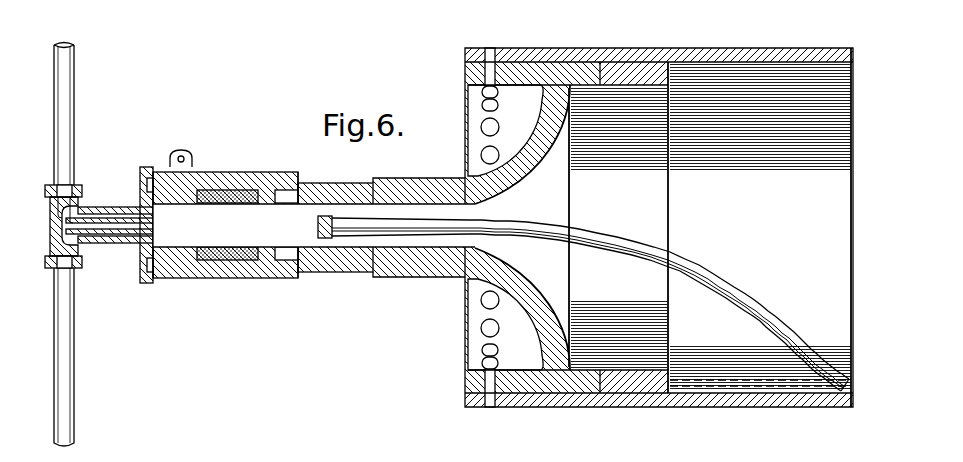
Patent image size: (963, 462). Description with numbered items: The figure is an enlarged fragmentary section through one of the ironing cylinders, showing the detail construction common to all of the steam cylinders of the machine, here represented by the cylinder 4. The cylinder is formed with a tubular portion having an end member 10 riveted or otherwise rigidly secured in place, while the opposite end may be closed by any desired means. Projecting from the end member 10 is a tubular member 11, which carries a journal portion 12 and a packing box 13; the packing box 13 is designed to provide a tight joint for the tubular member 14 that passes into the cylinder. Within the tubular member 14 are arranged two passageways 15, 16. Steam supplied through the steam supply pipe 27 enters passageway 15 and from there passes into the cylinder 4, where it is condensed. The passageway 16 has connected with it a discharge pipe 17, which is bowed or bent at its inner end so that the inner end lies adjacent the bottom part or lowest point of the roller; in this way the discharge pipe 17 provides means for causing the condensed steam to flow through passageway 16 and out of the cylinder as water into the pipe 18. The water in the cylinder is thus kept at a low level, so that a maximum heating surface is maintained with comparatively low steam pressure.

The steam supply pipe 27 is at (62, 98).
The pipe 18 is at (62, 393).
The passageway 15 is at (93, 221).
The tubular member 14 is at (117, 210).
The passageway 16 is at (100, 243).
The packing box 13 is at (228, 260).
The journal portion 12 is at (345, 272).
The projecting tubular member 11 is at (413, 263).
The discharge pipe 17 is at (433, 236).
The end member 10 is at (562, 370).
The cylinder 4 is at (690, 397).